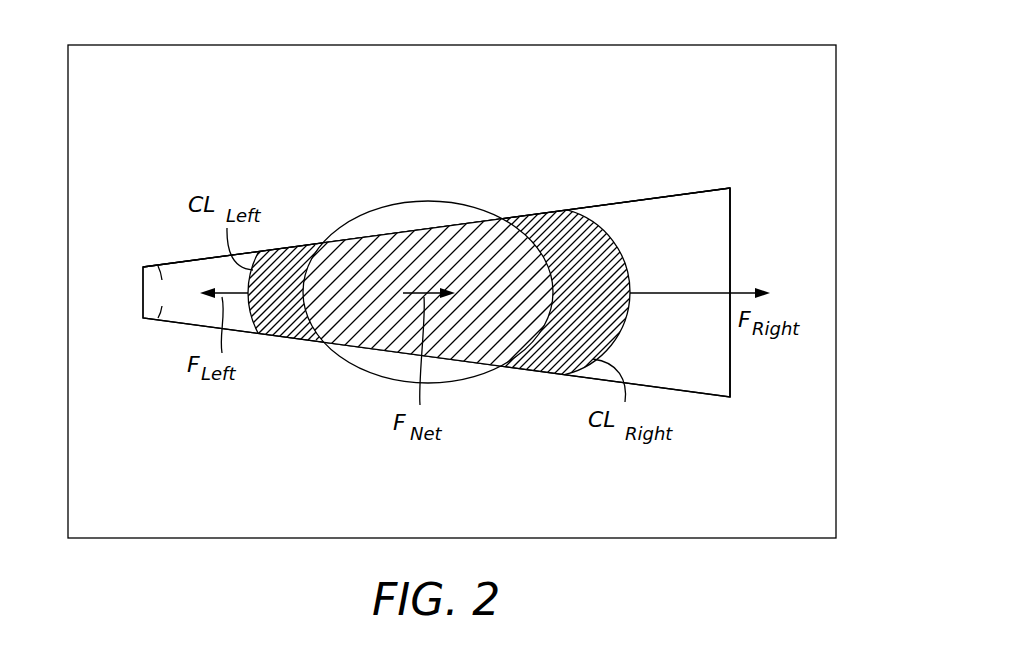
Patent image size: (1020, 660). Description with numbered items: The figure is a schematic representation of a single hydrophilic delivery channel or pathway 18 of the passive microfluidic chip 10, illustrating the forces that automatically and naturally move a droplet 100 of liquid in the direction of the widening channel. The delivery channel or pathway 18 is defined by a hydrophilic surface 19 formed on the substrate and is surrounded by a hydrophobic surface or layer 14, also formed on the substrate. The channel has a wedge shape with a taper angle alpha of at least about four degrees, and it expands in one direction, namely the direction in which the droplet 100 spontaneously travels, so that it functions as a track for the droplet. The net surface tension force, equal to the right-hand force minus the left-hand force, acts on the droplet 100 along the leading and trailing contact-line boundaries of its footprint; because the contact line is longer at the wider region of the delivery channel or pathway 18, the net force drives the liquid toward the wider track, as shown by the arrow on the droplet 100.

The microfluidic chip 10 is at (880, 80).
The hydrophobic surface or layer 14 is at (703, 107).
The delivery channel or pathway 18 is at (635, 200).
The hydrophilic surface 19 is at (717, 228).
The droplet 100 is at (432, 199).